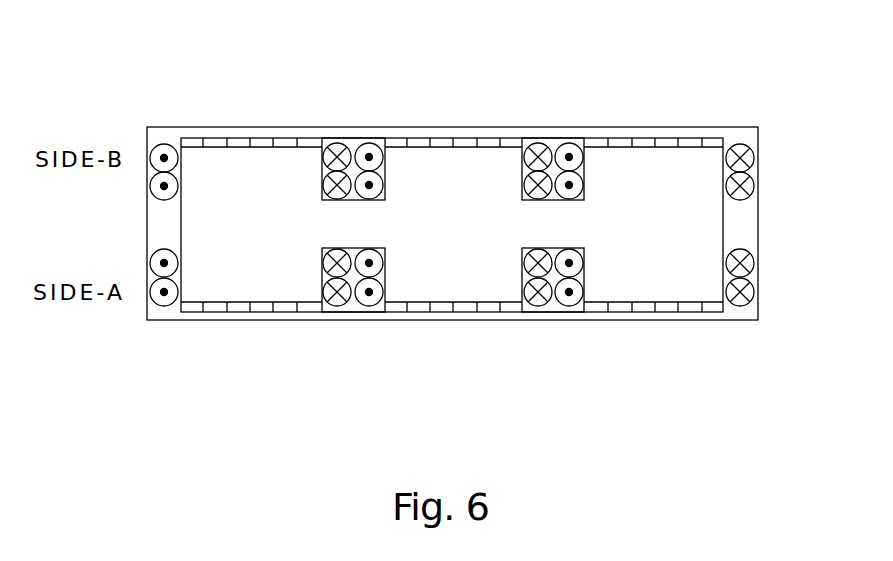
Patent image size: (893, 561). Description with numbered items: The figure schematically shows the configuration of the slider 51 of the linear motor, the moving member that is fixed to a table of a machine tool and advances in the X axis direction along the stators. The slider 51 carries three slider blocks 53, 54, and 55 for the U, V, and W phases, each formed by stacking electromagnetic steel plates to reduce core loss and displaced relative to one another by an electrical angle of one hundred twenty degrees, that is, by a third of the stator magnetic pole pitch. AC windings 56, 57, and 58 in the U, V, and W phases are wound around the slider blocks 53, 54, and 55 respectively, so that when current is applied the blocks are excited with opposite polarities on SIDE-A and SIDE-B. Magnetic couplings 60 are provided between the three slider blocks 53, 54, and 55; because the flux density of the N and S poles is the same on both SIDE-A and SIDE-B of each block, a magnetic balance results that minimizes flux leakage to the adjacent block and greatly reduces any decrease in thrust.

The slider 51 is at (762, 252).
The slider block 53 is at (268, 197).
The slider block 54 is at (487, 197).
The slider block 55 is at (697, 215).
The AC winding 56 is at (149, 253).
The AC winding 57 is at (355, 298).
The AC winding 58 is at (558, 299).
The magnetic coupling 60 is at (352, 220).